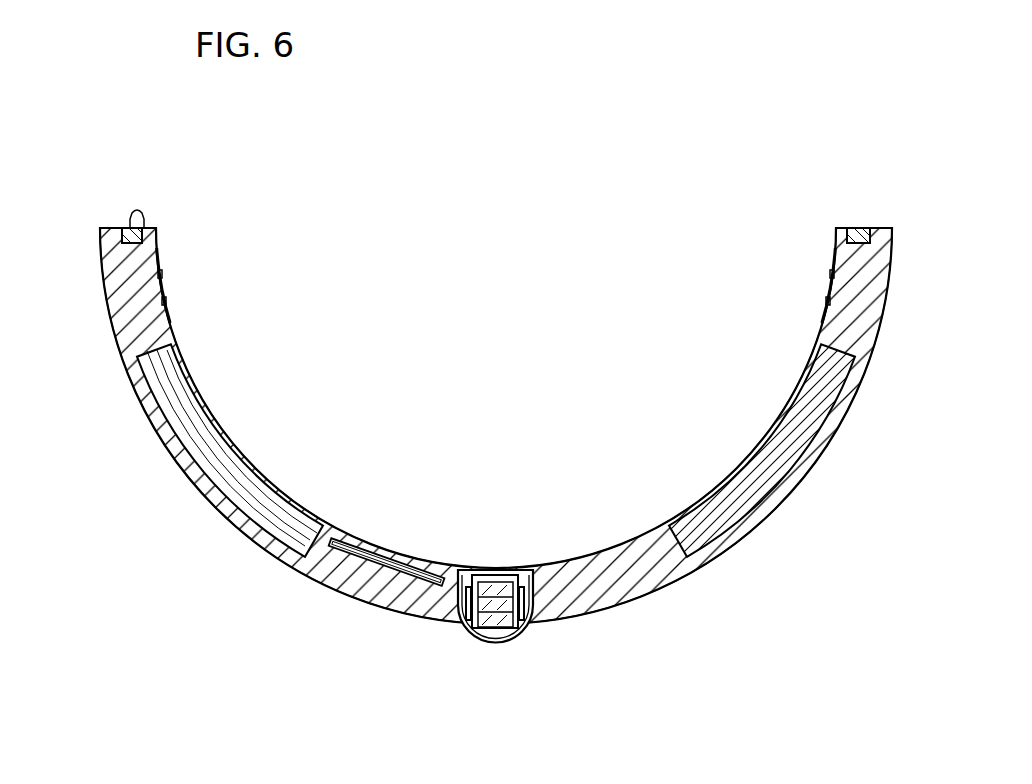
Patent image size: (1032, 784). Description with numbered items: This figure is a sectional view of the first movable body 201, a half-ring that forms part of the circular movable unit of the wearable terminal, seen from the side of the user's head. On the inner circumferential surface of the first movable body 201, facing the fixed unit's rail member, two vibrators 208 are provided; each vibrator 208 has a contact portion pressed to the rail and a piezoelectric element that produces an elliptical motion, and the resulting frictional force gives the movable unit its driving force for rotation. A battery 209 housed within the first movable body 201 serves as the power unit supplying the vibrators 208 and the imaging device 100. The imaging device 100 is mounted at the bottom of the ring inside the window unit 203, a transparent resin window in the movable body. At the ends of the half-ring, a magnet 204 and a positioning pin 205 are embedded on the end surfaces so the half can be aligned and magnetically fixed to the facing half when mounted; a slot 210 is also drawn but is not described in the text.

The first movable body 201 is at (682, 577).
The window unit 203 is at (485, 643).
The magnet 204 is at (128, 224).
The positioning pin 205 is at (140, 210).
The vibrator 208 is at (165, 280).
The battery 209 is at (192, 462).
The slot 210 is at (381, 559).
The imaging device 100 is at (505, 633).